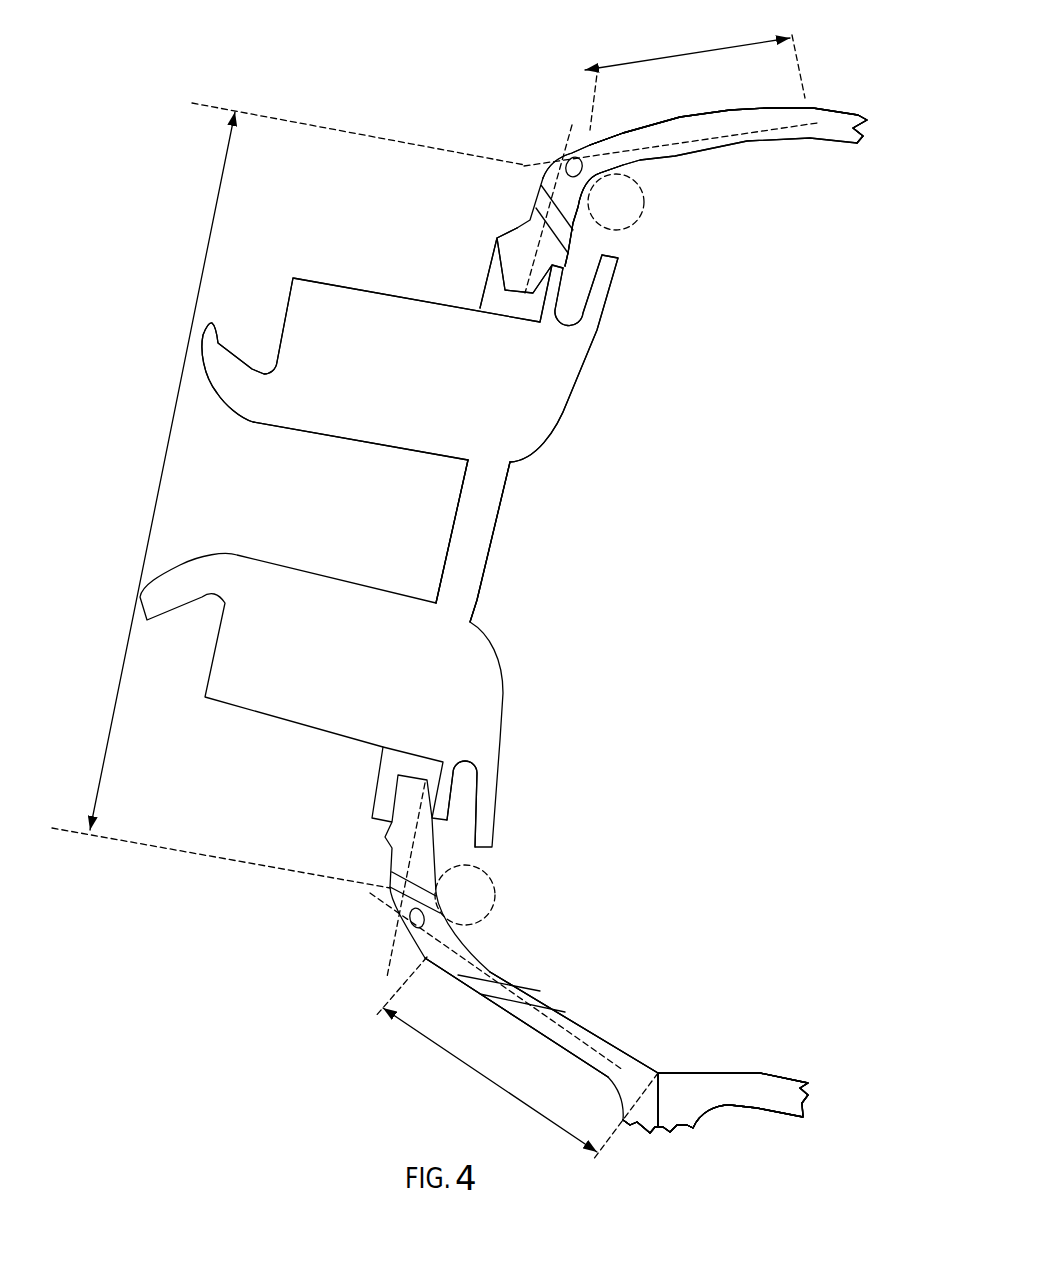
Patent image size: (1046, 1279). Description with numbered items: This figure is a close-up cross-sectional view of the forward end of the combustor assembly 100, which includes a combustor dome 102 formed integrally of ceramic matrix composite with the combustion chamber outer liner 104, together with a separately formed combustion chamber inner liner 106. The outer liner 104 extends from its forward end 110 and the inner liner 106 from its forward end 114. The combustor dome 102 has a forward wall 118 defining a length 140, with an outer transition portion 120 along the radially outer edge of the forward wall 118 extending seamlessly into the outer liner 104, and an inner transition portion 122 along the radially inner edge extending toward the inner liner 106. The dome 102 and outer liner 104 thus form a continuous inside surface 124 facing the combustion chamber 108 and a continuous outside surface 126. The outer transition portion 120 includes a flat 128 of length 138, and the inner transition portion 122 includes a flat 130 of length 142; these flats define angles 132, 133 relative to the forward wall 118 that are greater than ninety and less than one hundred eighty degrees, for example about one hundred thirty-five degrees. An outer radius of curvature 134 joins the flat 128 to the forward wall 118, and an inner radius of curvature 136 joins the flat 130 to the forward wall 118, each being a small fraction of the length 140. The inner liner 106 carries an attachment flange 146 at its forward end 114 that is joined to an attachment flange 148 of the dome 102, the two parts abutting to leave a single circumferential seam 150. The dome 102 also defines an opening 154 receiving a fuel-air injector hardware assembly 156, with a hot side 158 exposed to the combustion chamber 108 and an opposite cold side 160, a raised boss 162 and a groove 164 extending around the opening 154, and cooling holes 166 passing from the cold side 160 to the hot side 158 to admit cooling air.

The combustor assembly 100 is at (250, 103).
The combustor dome 102 is at (402, 810).
The combustion chamber outer liner 104 is at (843, 120).
The combustion chamber inner liner 106 is at (773, 1090).
The combustion chamber 108 is at (751, 589).
The forward end 110 is at (837, 97).
The forward end 114 is at (755, 1057).
The forward wall 118 is at (488, 525).
The outer transition portion 120 is at (753, 193).
The inner transition portion 122 is at (605, 942).
The inside surface 124 is at (808, 145).
The outside surface 126 is at (817, 107).
The flat 128 is at (714, 135).
The flat 130 is at (562, 1018).
The angle 132 is at (582, 163).
The angle 133 is at (440, 913).
The outer radius of curvature 134 is at (598, 183).
The inner radius of curvature 136 is at (438, 905).
The length 138 is at (671, 62).
The length 140 is at (183, 380).
The length 142 is at (453, 1055).
The attachment flange 146 is at (697, 1121).
The attachment flange 148 is at (647, 1123).
The seam 150 is at (662, 1070).
The opening 154 is at (446, 558).
The fuel-air injector hardware assembly 156 is at (442, 268).
The hot side 158 is at (450, 828).
The cold side 160 is at (388, 852).
The raised boss 162 is at (517, 230).
The groove 164 is at (562, 283).
The cooling holes 166 is at (533, 995).